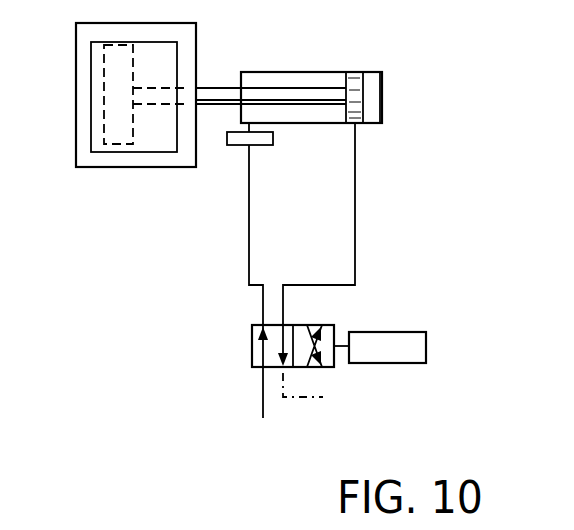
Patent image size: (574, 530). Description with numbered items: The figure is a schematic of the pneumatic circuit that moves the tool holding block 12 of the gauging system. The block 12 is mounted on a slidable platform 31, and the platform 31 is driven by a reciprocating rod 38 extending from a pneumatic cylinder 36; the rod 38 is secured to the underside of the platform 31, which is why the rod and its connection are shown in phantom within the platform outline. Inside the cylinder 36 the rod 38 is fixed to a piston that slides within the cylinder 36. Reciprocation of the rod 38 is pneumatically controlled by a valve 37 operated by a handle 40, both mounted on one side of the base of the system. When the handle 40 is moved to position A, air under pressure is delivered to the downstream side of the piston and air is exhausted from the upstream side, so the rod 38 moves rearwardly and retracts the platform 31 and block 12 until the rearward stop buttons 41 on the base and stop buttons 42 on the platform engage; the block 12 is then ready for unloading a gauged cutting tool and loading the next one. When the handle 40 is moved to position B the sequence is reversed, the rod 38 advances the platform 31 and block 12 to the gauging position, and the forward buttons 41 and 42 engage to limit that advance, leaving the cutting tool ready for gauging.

The slidable platform 31 is at (83, 33).
The stop buttons 41 is at (137, 35).
The block 12 is at (98, 50).
The reciprocating rod 38 is at (155, 90).
The pneumatic cylinder 36 is at (288, 73).
The stop buttons 42 is at (245, 145).
The valve 37 is at (283, 347).
The handle 40 is at (388, 333).
The position A is at (252, 330).
The position B is at (330, 323).